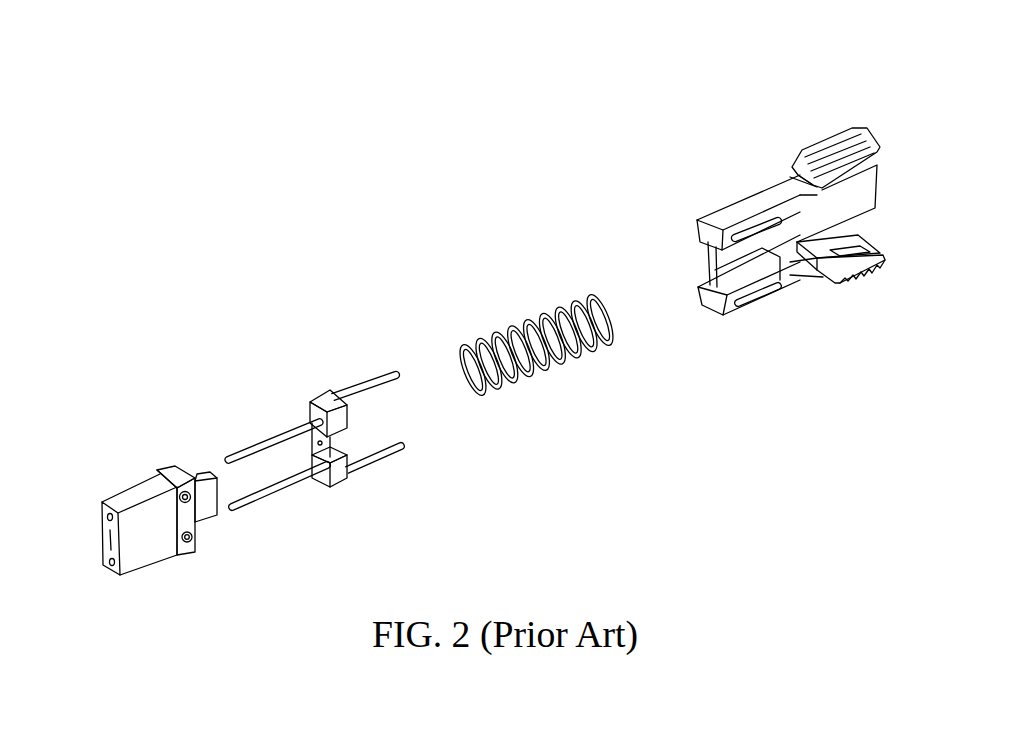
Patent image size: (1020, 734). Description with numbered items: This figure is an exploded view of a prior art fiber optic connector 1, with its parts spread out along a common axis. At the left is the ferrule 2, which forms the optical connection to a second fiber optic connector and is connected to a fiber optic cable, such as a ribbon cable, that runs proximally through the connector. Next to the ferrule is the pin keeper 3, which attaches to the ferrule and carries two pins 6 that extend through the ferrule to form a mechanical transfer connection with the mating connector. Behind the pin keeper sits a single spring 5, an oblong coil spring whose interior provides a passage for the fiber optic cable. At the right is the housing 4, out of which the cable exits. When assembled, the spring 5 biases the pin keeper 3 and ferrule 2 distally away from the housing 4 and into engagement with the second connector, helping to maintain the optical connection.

The prior art fiber optic connector 1 is at (368, 170).
The ferrule 2 is at (104, 464).
The pin keeper 3 is at (307, 362).
The housing 4 is at (728, 138).
The spring 5 is at (497, 293).
The pins 6 is at (282, 482).